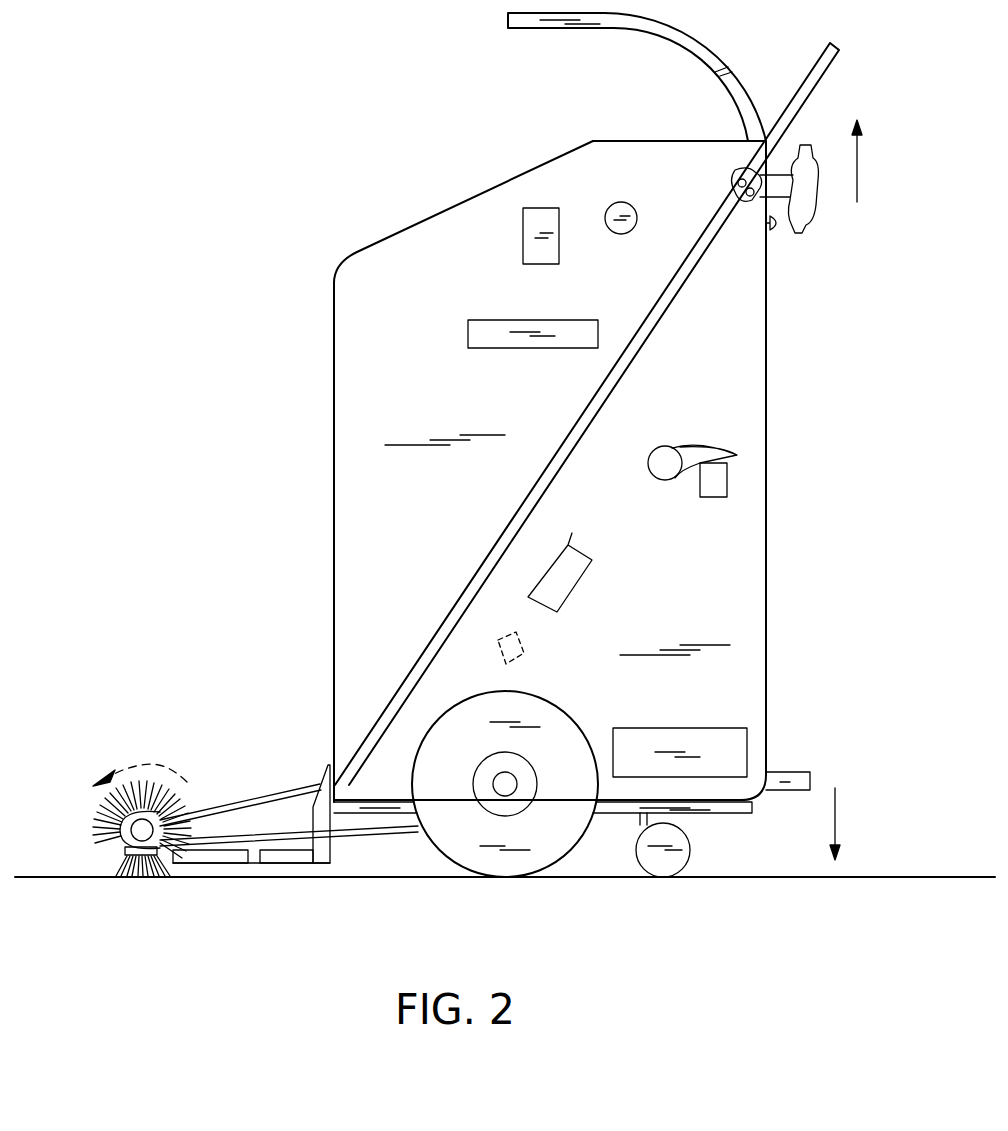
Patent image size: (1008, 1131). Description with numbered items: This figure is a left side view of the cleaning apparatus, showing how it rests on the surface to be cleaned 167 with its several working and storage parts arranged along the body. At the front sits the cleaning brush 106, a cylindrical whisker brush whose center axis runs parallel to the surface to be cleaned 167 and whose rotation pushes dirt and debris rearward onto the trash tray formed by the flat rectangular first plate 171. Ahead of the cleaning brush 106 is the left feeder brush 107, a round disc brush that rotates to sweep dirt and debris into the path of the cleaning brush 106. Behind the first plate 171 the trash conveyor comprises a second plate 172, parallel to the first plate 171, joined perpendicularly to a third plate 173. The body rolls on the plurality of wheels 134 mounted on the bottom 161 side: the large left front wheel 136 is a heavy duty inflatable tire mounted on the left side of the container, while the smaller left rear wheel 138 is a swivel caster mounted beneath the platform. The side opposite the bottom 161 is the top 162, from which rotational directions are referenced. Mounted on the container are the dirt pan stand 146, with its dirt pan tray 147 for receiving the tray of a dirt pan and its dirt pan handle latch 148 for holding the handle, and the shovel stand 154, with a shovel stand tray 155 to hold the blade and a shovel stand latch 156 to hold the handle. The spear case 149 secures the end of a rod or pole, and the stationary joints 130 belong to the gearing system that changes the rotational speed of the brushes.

The cleaning brush 106 is at (103, 853).
The left feeder brush 107 is at (135, 878).
The plurality of stationary joints 130 is at (560, 580).
The plurality of wheels 134 is at (530, 877).
The left front wheel 136 is at (560, 718).
The left rear wheel 138 is at (672, 862).
The dirt pan stand 146 is at (520, 308).
The dirt pan tray 147 is at (514, 349).
The dirt pan handle latch 148 is at (551, 250).
The spear case 149 is at (515, 660).
The shovel stand 154 is at (752, 697).
The shovel stand tray 155 is at (733, 752).
The shovel stand latch 156 is at (727, 486).
The bottom 161 is at (863, 820).
The top 162 is at (611, 414).
The surface to be cleaned 167 is at (383, 878).
The first plate 171 is at (223, 857).
The second plate 172 is at (293, 857).
The third plate 173 is at (323, 853).